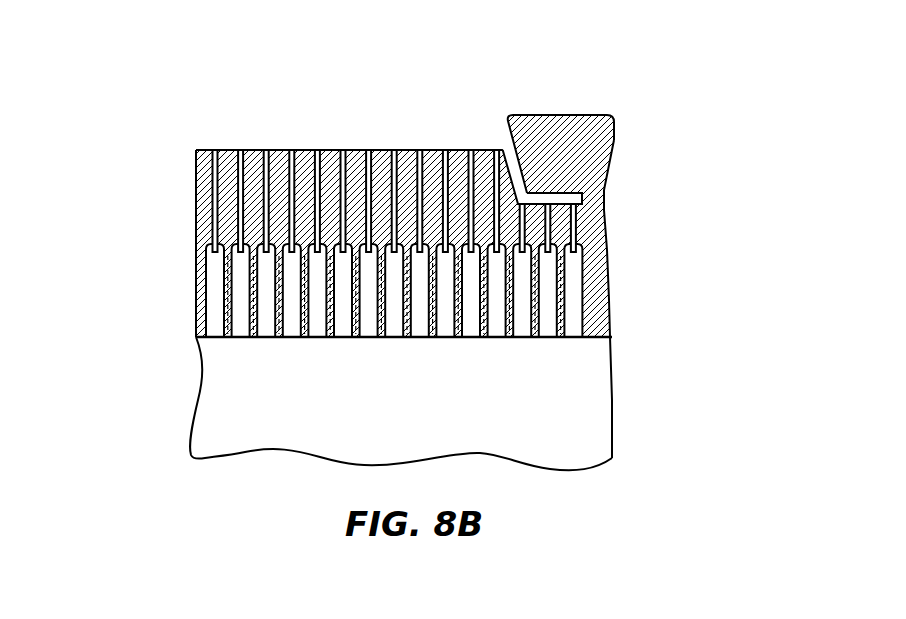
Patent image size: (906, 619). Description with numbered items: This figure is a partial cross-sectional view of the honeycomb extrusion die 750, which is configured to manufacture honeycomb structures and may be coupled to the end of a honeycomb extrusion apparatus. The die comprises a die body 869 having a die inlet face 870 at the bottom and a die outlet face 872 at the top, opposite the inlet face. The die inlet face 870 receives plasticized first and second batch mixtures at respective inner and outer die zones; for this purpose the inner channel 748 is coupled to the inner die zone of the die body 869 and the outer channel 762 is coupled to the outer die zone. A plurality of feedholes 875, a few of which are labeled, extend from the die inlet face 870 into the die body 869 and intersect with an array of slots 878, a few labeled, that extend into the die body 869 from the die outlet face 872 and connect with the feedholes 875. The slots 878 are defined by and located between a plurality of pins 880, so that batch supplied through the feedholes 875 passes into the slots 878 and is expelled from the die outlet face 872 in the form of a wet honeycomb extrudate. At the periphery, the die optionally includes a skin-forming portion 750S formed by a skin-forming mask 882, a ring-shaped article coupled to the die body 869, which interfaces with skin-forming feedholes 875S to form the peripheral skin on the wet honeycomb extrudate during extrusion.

The honeycomb extrusion die 750 is at (422, 184).
The skin-forming portion 750S is at (626, 190).
The die body 869 is at (343, 140).
The die outlet face 872 is at (408, 150).
The slots 878 is at (289, 150).
The pins 880 is at (462, 150).
The skin-forming mask 882 is at (573, 114).
The feedholes 875 is at (240, 299).
The skin-forming feedholes 875S is at (525, 322).
The die inlet face 870 is at (237, 338).
The inner channel 748 is at (224, 418).
The outer channel 762 is at (580, 440).